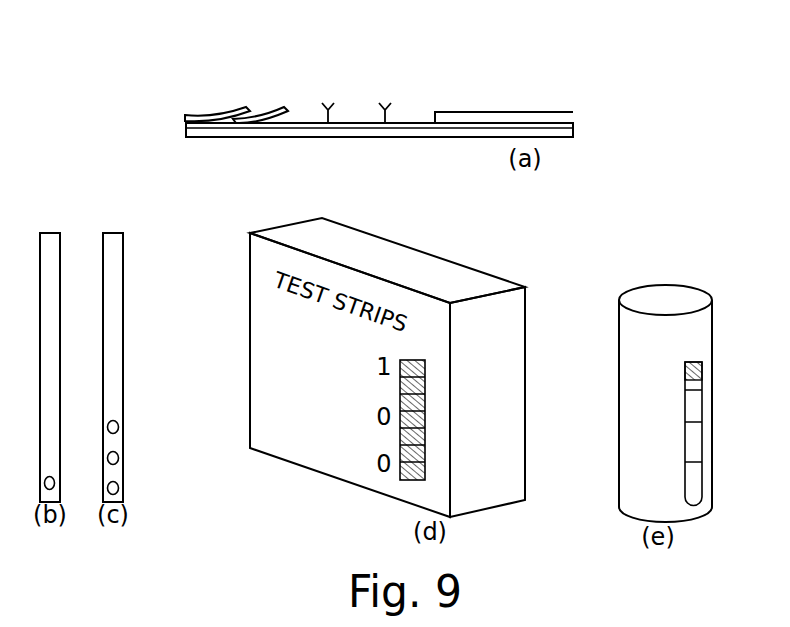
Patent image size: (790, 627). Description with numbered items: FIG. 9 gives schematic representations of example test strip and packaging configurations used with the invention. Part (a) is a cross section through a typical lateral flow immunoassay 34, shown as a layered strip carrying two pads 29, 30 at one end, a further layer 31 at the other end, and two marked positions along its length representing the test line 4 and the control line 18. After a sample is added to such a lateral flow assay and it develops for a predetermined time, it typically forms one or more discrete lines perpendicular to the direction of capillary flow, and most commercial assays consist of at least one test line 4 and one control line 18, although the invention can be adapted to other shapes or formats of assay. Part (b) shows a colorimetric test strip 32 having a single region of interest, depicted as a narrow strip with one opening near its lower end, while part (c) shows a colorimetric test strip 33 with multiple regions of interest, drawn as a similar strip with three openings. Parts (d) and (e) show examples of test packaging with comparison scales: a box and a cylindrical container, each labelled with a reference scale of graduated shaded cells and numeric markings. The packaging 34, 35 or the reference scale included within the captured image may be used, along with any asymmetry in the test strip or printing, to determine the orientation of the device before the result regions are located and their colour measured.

The test line 4 is at (329, 94).
The control line 18 is at (386, 94).
The first pad 29 is at (215, 97).
The second pad 30 is at (277, 95).
The cover layer 31 is at (511, 96).
The lateral flow immunoassay 34 is at (379, 147).
The test strip 32 is at (50, 351).
The test strip with three openings 33 is at (113, 351).
The packaging 35 is at (615, 273).